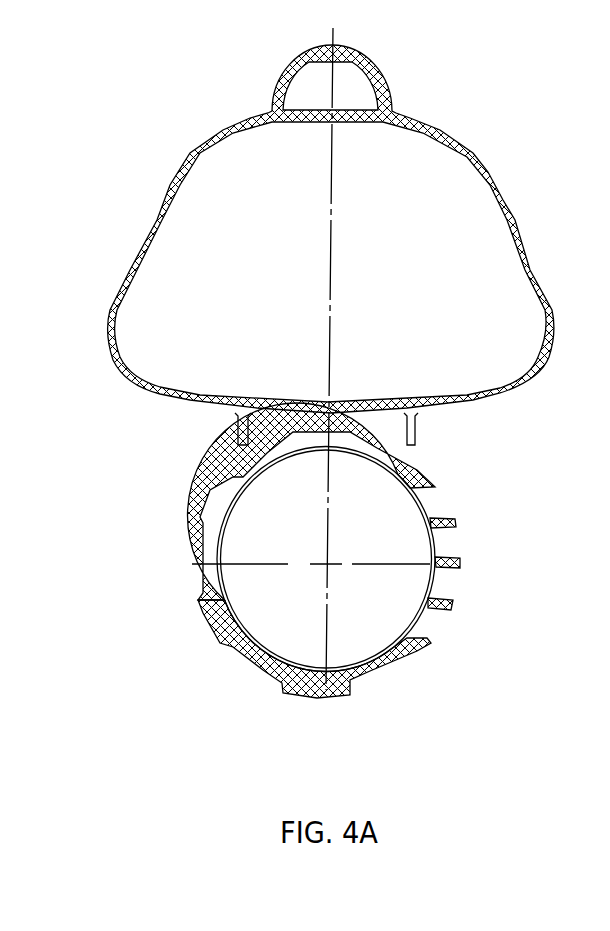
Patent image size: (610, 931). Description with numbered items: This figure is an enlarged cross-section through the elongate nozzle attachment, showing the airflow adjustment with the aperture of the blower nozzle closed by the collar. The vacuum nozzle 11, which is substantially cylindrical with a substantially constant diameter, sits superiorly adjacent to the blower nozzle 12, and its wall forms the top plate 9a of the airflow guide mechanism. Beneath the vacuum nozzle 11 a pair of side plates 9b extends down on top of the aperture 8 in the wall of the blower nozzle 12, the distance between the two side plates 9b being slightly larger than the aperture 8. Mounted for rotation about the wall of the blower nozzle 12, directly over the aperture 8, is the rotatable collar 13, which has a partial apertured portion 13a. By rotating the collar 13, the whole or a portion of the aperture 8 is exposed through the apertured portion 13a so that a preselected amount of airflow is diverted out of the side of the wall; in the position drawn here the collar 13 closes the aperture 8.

The vacuum nozzle 11 is at (488, 172).
The top plate 9a is at (243, 422).
The side plates 9b is at (415, 430).
The aperture 8 is at (283, 470).
The blower nozzle 12 is at (205, 538).
The rotatable collar 13 is at (377, 675).
The partial apertured portion 13a is at (450, 583).